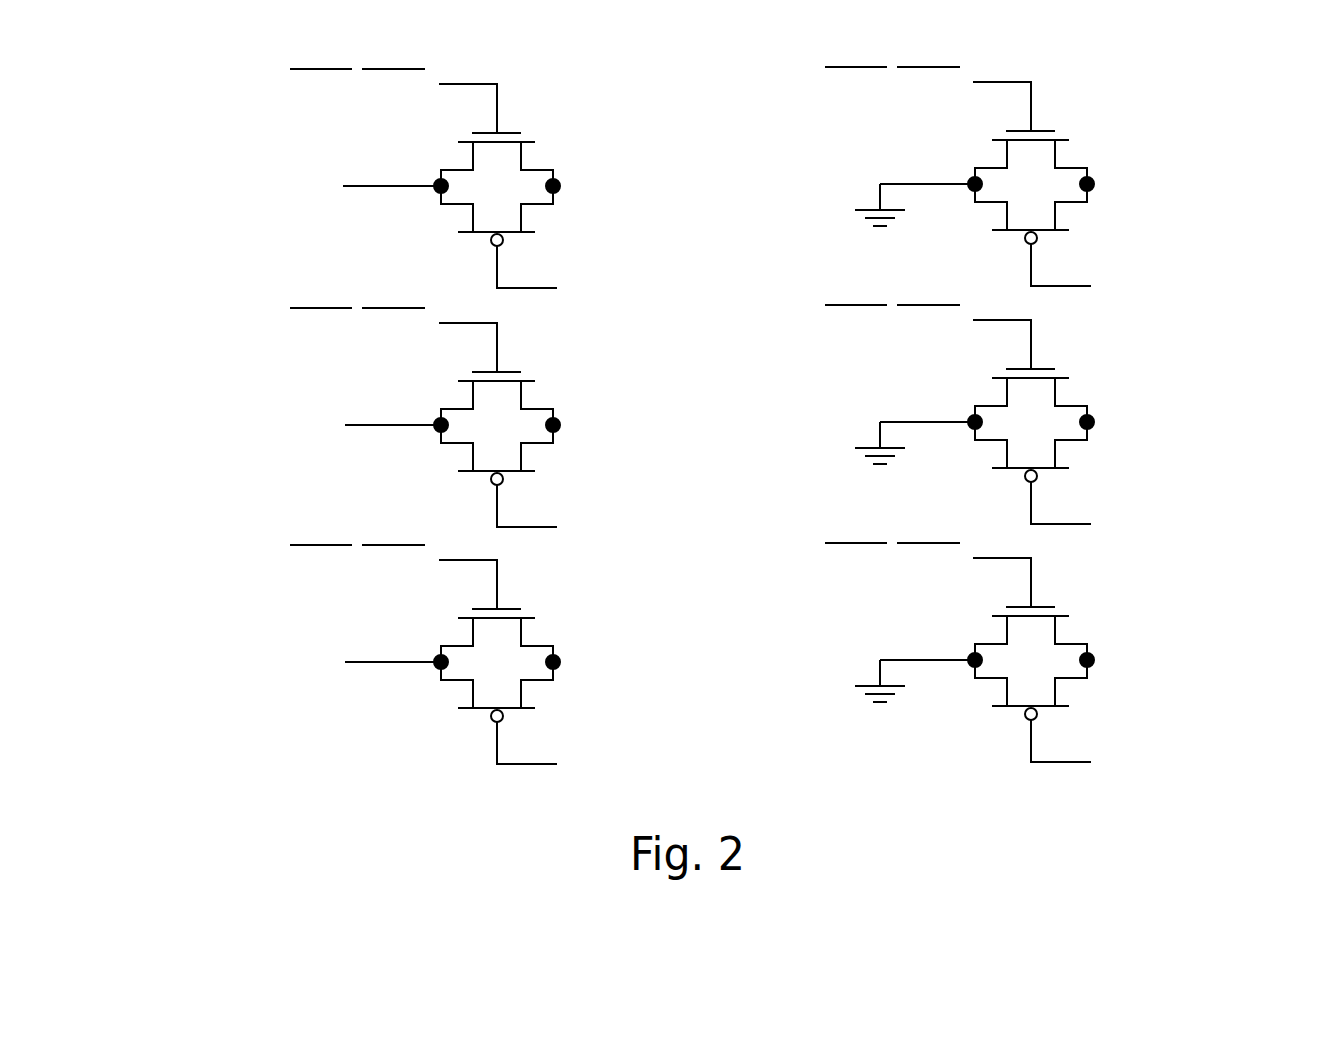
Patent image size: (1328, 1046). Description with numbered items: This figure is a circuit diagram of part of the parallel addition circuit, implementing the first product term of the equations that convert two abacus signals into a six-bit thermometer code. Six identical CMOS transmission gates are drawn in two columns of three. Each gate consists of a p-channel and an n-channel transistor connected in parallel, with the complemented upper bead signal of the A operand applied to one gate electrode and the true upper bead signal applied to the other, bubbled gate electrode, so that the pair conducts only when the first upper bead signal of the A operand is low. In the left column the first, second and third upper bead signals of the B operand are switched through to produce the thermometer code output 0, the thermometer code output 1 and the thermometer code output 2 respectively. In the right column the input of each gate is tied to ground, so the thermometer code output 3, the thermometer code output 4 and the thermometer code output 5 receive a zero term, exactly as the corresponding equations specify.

The thermometer code output K0 0 is at (553, 186).
The thermometer code output K1 1 is at (553, 425).
The thermometer code output K2 2 is at (553, 662).
The thermometer code output K3 3 is at (1087, 184).
The thermometer code output K4 4 is at (1087, 422).
The thermometer code output K5 5 is at (1087, 660).